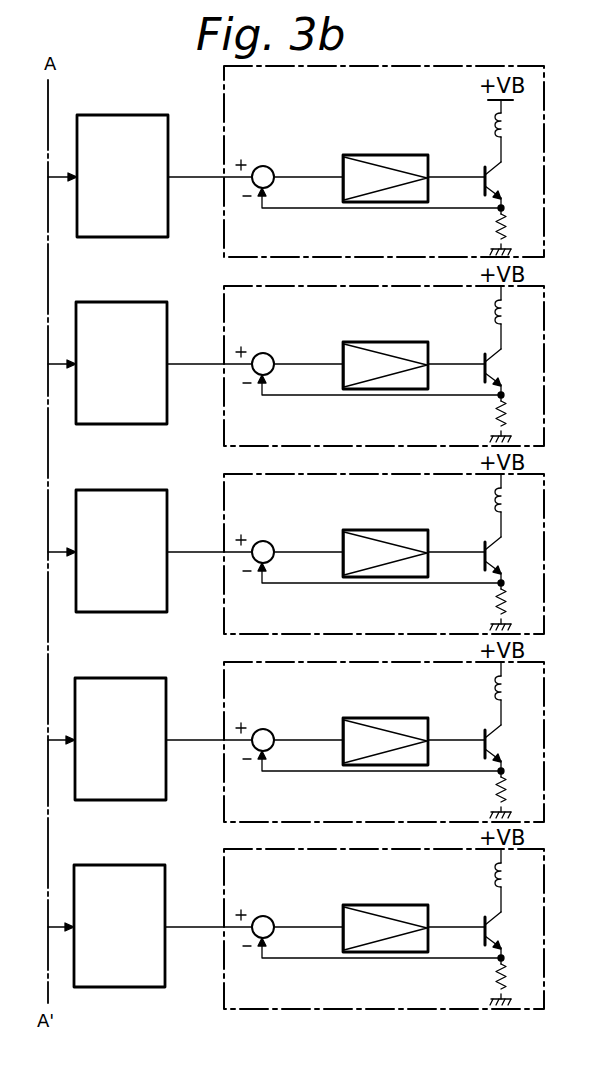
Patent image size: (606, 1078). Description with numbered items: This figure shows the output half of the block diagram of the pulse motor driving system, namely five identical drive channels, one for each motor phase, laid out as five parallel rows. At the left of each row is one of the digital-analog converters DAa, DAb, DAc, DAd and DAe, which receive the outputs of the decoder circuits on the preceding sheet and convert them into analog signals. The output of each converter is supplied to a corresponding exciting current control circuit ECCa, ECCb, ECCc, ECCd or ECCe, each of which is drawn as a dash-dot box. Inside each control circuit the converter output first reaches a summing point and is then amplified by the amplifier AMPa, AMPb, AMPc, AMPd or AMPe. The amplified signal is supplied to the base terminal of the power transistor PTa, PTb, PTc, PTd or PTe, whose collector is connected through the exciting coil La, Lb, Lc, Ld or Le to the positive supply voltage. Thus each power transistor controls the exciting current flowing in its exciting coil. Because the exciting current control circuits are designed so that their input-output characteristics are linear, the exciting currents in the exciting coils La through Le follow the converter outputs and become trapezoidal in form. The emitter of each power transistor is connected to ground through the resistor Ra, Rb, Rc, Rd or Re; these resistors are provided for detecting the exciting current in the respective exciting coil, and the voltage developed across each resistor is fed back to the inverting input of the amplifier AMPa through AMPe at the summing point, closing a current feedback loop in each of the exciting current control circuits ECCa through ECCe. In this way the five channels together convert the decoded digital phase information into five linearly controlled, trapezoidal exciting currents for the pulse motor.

The digital-analog converter DAa is at (108, 176).
The digital-analog converter DAb is at (107, 363).
The digital-analog converter DAc is at (107, 551).
The digital-analog converter DAd is at (107, 739).
The digital-analog converter DAe is at (106, 926).
The exciting current control circuit ECCa is at (384, 161).
The exciting current control circuit ECCb is at (384, 366).
The exciting current control circuit ECCc is at (384, 554).
The exciting current control circuit ECCd is at (384, 742).
The exciting current control circuit ECCe is at (384, 929).
The amplifier AMPa is at (385, 160).
The amplifier AMPb is at (385, 347).
The amplifier AMPc is at (385, 535).
The amplifier AMPd is at (385, 723).
The amplifier AMPe is at (385, 910).
The power transistor PTa is at (515, 180).
The power transistor PTb is at (517, 367).
The power transistor PTc is at (514, 555).
The power transistor PTd is at (517, 743).
The power transistor PTe is at (515, 930).
The exciting coil La is at (516, 126).
The exciting coil Lb is at (516, 313).
The exciting coil Lc is at (515, 501).
The exciting coil Ld is at (516, 689).
The exciting coil Le is at (515, 876).
The resistor Ra is at (517, 227).
The resistor Rb is at (518, 414).
The resistor Rc is at (517, 602).
The resistor Rd is at (518, 790).
The resistor Re is at (517, 977).